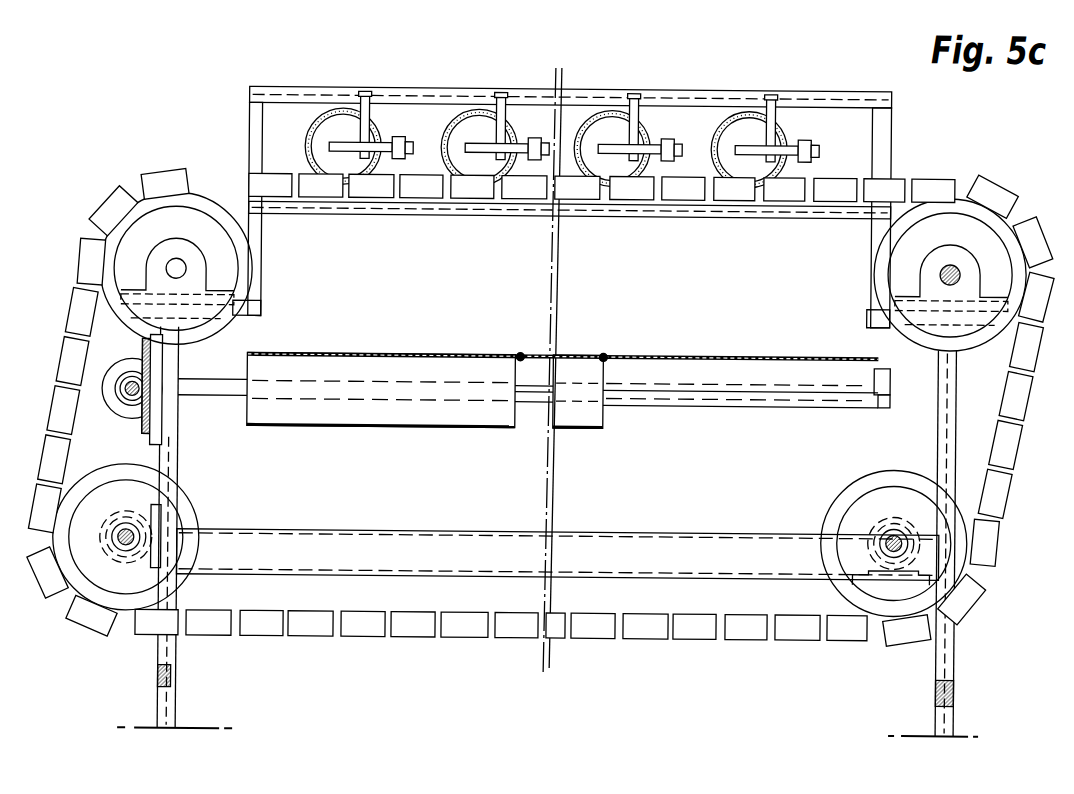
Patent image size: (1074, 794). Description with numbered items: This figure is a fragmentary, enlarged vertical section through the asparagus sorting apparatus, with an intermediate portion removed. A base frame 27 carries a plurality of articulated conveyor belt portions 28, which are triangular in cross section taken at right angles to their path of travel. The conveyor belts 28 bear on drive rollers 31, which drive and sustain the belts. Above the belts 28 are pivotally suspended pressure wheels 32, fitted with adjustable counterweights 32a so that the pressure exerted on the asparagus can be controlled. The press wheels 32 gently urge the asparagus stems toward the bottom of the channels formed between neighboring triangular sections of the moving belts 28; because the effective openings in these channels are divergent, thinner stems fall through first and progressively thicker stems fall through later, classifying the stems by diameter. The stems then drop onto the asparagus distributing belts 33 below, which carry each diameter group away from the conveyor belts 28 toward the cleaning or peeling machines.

The base frame 27 is at (875, 110).
The articulated conveyor belt portions 28 is at (843, 182).
The drive rollers 31 is at (165, 257).
The pressure wheels 32 is at (610, 138).
The counterweights 32a is at (817, 128).
The asparagus distributing belts 33 is at (445, 413).